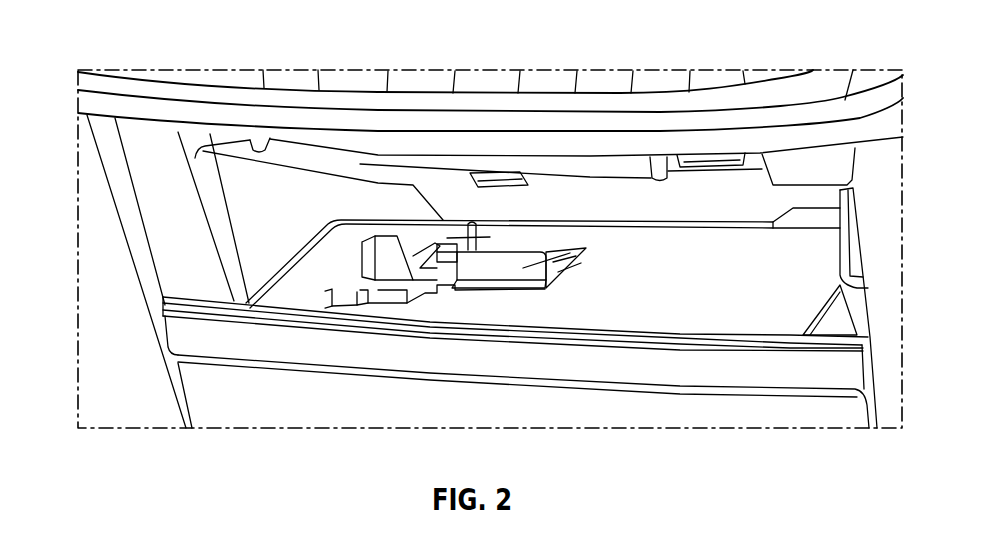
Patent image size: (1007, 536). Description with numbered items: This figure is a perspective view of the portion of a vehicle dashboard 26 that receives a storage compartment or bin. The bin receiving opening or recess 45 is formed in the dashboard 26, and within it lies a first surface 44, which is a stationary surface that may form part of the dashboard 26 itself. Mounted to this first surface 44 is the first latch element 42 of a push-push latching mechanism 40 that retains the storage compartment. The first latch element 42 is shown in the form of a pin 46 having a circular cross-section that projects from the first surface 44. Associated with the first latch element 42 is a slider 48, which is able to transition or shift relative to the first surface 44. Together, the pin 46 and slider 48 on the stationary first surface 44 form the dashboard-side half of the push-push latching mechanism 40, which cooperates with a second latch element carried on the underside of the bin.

The dashboard 26 is at (134, 267).
The push-push latching mechanism 40 is at (446, 193).
The first latch element 42 is at (522, 292).
The first surface 44 is at (803, 286).
The bin receiving opening or recess 45 is at (248, 218).
The pin 46 is at (475, 237).
The slider 48 is at (560, 258).